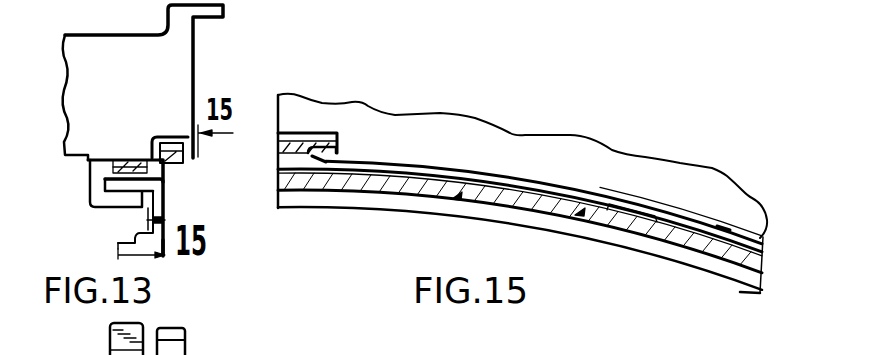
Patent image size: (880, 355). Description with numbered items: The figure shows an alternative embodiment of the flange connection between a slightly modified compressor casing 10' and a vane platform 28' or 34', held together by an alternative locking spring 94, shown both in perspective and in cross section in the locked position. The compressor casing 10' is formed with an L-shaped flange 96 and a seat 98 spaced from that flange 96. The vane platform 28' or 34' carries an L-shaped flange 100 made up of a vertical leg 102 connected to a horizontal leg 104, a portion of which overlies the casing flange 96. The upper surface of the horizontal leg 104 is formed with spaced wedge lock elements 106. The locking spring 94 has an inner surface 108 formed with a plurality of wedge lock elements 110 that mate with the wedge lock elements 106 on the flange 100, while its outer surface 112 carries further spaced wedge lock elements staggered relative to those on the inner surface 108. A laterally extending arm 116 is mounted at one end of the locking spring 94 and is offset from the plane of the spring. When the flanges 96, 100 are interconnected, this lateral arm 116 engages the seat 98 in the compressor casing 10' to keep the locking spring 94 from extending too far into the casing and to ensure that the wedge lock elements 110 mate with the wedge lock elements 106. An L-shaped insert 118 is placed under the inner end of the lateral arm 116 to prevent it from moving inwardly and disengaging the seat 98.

In FIG. 13, the compressor casing 10' is at (158, 82).
In FIG. 15, the compressor casing 10' is at (522, 165).
In FIG. 13, the vane platform 28' is at (228, 267).
In FIG. 15, the vane platform 28' is at (520, 217).
In FIG. 15, the vane platform 34' is at (520, 248).
In FIG. 15, the locking spring 94 is at (728, 223).
In FIG. 13, the L-shaped flange 96 is at (88, 197).
In FIG. 13, the seat 98 is at (162, 134).
In FIG. 15, the seat 98 is at (327, 146).
In FIG. 13, the L-shaped flange 100 is at (168, 199).
In FIG. 15, the L-shaped flange 100 is at (370, 193).
In FIG. 13, the vertical leg 102 is at (155, 212).
In FIG. 13, the horizontal leg 104 is at (128, 182).
In FIG. 15, the horizontal leg 104 is at (566, 228).
In FIG. 13, the wedge lock elements 106 is at (120, 172).
In FIG. 15, the wedge lock elements 106 is at (632, 225).
In FIG. 15, the inner surface 108 is at (730, 250).
In FIG. 13, the wedge lock elements 110 is at (127, 160).
In FIG. 15, the wedge lock elements 110 is at (653, 233).
In FIG. 15, the outer surface 112 is at (730, 233).
In FIG. 13, the laterally extending arm 116 is at (183, 160).
In FIG. 15, the laterally extending arm 116 is at (340, 162).
In FIG. 15, the L-shaped insert 118 is at (297, 134).